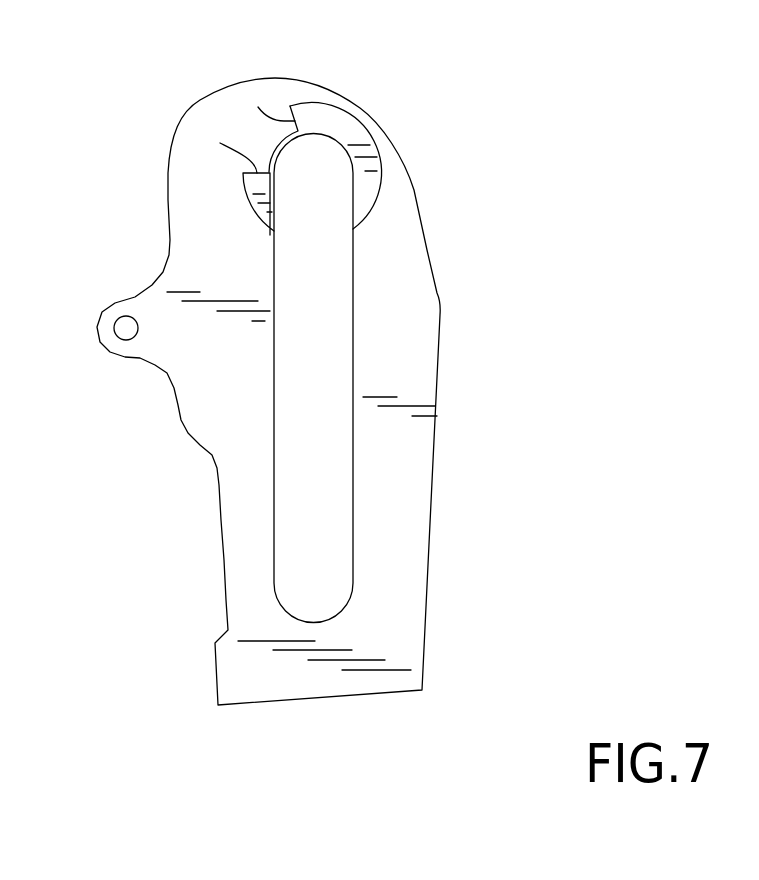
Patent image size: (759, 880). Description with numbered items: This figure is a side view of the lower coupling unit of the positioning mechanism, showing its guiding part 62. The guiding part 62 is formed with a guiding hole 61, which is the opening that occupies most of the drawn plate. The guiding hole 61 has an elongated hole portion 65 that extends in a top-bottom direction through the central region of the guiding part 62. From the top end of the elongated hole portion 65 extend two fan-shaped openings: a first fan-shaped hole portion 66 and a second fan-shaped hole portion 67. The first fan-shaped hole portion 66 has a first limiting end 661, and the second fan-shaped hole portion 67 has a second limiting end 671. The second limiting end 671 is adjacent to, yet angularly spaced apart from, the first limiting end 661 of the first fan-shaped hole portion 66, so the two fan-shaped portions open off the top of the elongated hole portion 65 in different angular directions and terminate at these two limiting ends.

The guiding hole 61 is at (368, 462).
The guiding part 62 is at (393, 635).
The elongated hole portion 65 is at (297, 467).
The first fan-shaped hole portion 66 is at (334, 98).
The first limiting end 661 is at (258, 107).
The second fan-shaped hole portion 67 is at (235, 200).
The second limiting end 671 is at (220, 143).